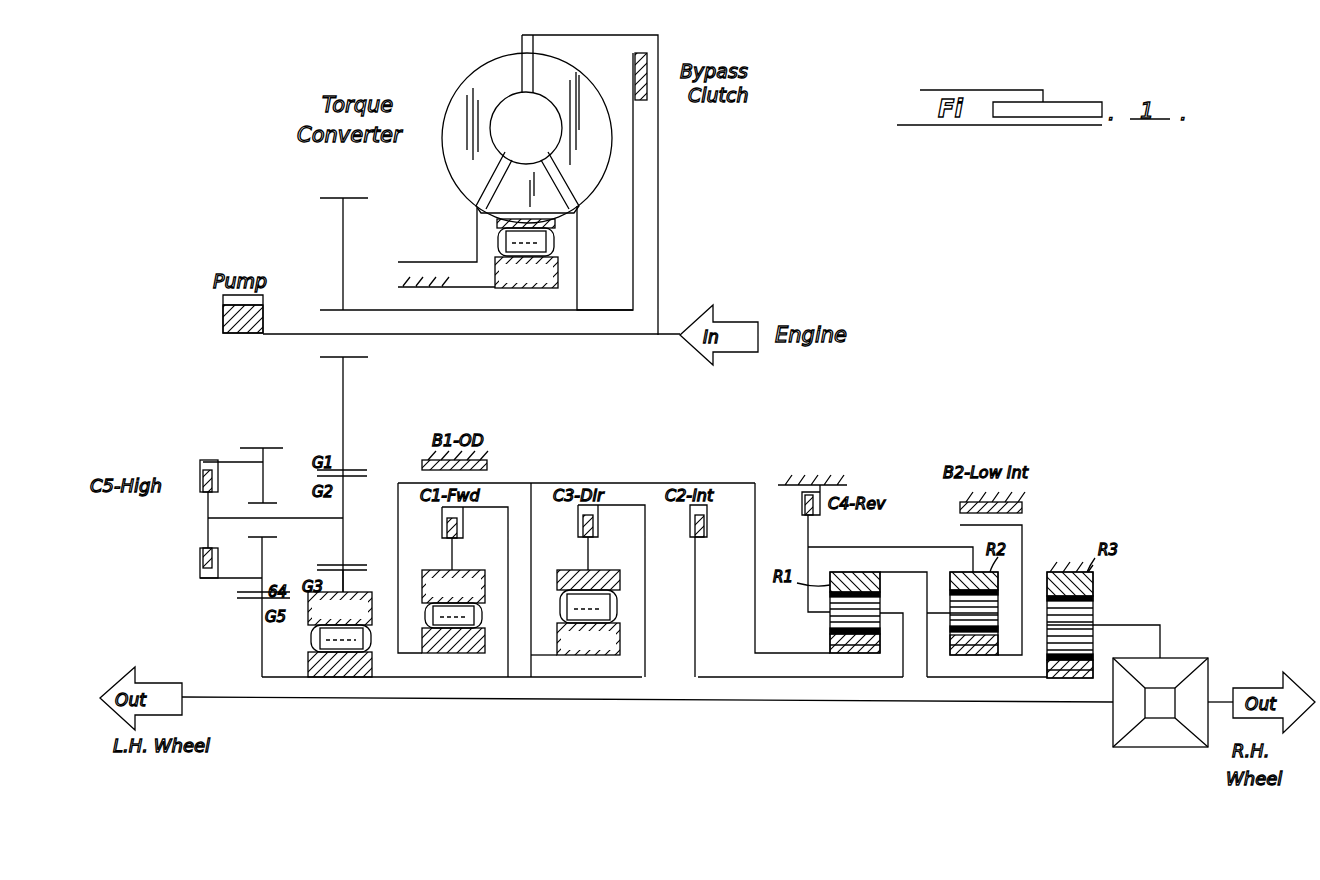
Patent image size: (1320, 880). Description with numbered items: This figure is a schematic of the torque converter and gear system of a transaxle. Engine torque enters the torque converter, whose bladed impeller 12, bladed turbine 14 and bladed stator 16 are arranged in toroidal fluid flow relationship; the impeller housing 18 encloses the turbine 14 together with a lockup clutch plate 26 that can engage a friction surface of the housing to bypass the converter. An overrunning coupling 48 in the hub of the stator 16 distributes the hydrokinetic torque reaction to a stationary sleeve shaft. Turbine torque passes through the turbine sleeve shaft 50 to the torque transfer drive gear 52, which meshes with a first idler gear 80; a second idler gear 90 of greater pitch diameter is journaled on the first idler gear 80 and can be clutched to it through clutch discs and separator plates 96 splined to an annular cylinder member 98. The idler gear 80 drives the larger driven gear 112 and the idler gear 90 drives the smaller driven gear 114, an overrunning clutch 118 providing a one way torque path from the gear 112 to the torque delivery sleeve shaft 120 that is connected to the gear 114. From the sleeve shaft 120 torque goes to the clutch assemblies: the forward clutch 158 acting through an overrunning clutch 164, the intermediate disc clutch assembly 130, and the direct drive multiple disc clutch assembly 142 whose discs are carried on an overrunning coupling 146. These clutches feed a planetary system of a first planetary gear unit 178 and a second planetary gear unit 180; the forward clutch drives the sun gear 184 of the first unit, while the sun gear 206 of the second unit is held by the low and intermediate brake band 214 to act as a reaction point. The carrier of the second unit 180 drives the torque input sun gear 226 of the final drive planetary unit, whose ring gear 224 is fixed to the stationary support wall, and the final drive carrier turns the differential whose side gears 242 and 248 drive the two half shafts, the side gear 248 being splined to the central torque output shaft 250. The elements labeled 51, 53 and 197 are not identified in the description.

The bladed impeller 12 is at (478, 82).
The bladed turbine 14 is at (580, 93).
The bladed stator 16 is at (510, 185).
The impeller housing 18 is at (658, 239).
The lockup clutch plate 26 is at (647, 95).
The overrunning coupling 48 is at (555, 252).
The turbine sleeve shaft 50 is at (433, 311).
The torque transfer drive gear 52 is at (343, 230).
The first idler gear 80 is at (345, 502).
The second idler gear 90 is at (265, 478).
The clutch discs and separator plates 96 is at (208, 462).
The annular cylinder member 98 is at (209, 563).
The driven gear 112 is at (345, 583).
The driven gear 114 is at (262, 633).
The overrunning clutch 118 is at (345, 655).
The torque delivery sleeve shaft 120 is at (430, 679).
The disc clutch assembly 130 is at (708, 527).
The multiple disc clutch assembly 142 is at (598, 525).
The overrunning coupling 146 is at (605, 614).
The forward clutch 158 is at (462, 527).
The overrunning clutch 164 is at (470, 655).
The first planetary gear unit 178 is at (878, 557).
The second planetary gear unit 180 is at (1008, 565).
The sun gear 184 is at (855, 653).
The clutch C4 drum 197 is at (803, 505).
The sun gear 206 is at (990, 656).
The low and intermediate brake band 214 is at (1022, 508).
The fixed ring gear 224 is at (1093, 583).
The torque input sun gear 226 is at (1085, 679).
The side gear 242 is at (1171, 702).
The side gear 248 is at (1130, 720).
The torque output shaft 250 is at (594, 679).
The sun gear S1 51 is at (830, 645).
The sun gear S3 53 is at (1058, 679).